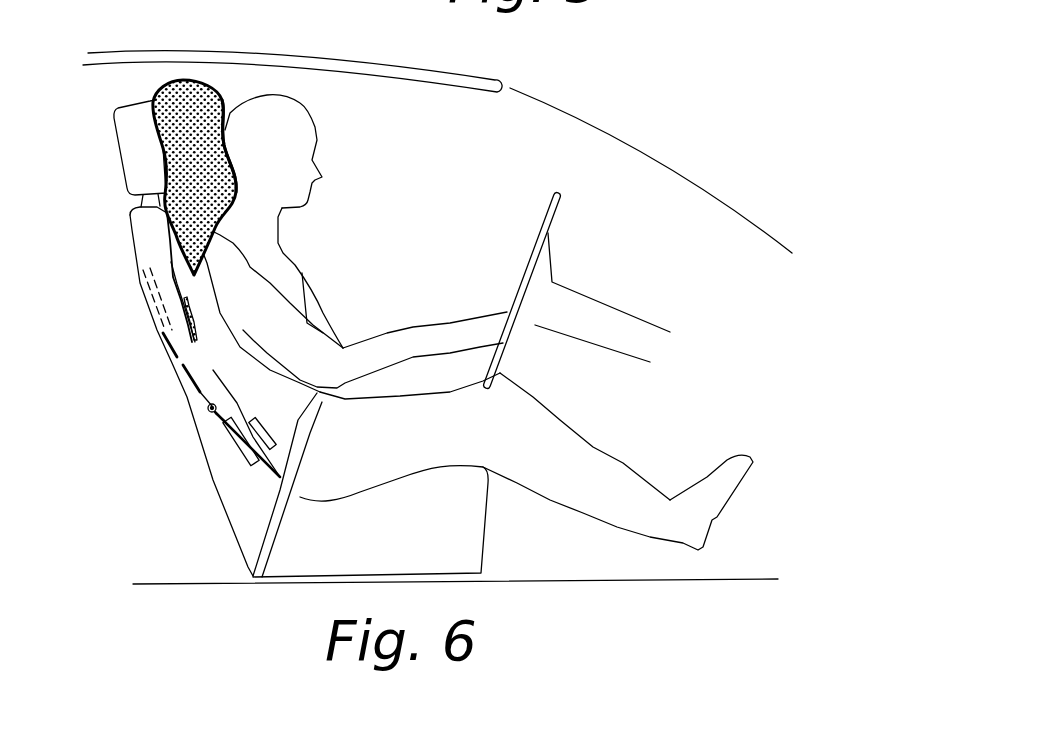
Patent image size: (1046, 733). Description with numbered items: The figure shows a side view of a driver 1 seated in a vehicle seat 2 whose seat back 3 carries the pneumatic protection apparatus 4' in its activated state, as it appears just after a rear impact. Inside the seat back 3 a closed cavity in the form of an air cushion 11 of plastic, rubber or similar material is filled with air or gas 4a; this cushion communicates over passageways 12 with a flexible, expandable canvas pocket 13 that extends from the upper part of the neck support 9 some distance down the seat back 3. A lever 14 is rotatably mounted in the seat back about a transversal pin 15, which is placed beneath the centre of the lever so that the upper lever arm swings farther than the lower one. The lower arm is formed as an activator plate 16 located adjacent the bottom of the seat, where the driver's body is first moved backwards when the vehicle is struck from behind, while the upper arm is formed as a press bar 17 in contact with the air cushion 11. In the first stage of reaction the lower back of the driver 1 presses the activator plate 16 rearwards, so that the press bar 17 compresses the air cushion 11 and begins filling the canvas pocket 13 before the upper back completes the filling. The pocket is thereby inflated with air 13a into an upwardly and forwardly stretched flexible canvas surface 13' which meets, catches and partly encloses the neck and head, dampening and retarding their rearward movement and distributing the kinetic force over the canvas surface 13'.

The body of the driver 1 is at (280, 272).
The vehicle seat 2 is at (422, 545).
The seat back 3 is at (188, 415).
The air or gas 4a is at (193, 325).
The protection apparatus 4' is at (133, 367).
The neck support 9 is at (140, 163).
The air cushion 11 is at (163, 255).
The passageways 12 is at (157, 219).
The canvas pocket 13 is at (149, 177).
The inflating air 13a is at (192, 107).
The stretched flexible canvas surface 13' is at (302, 144).
The lever 14 is at (195, 380).
The transversal pin 15 is at (211, 412).
The activator plate 16 is at (243, 450).
The press bar 17 is at (180, 298).